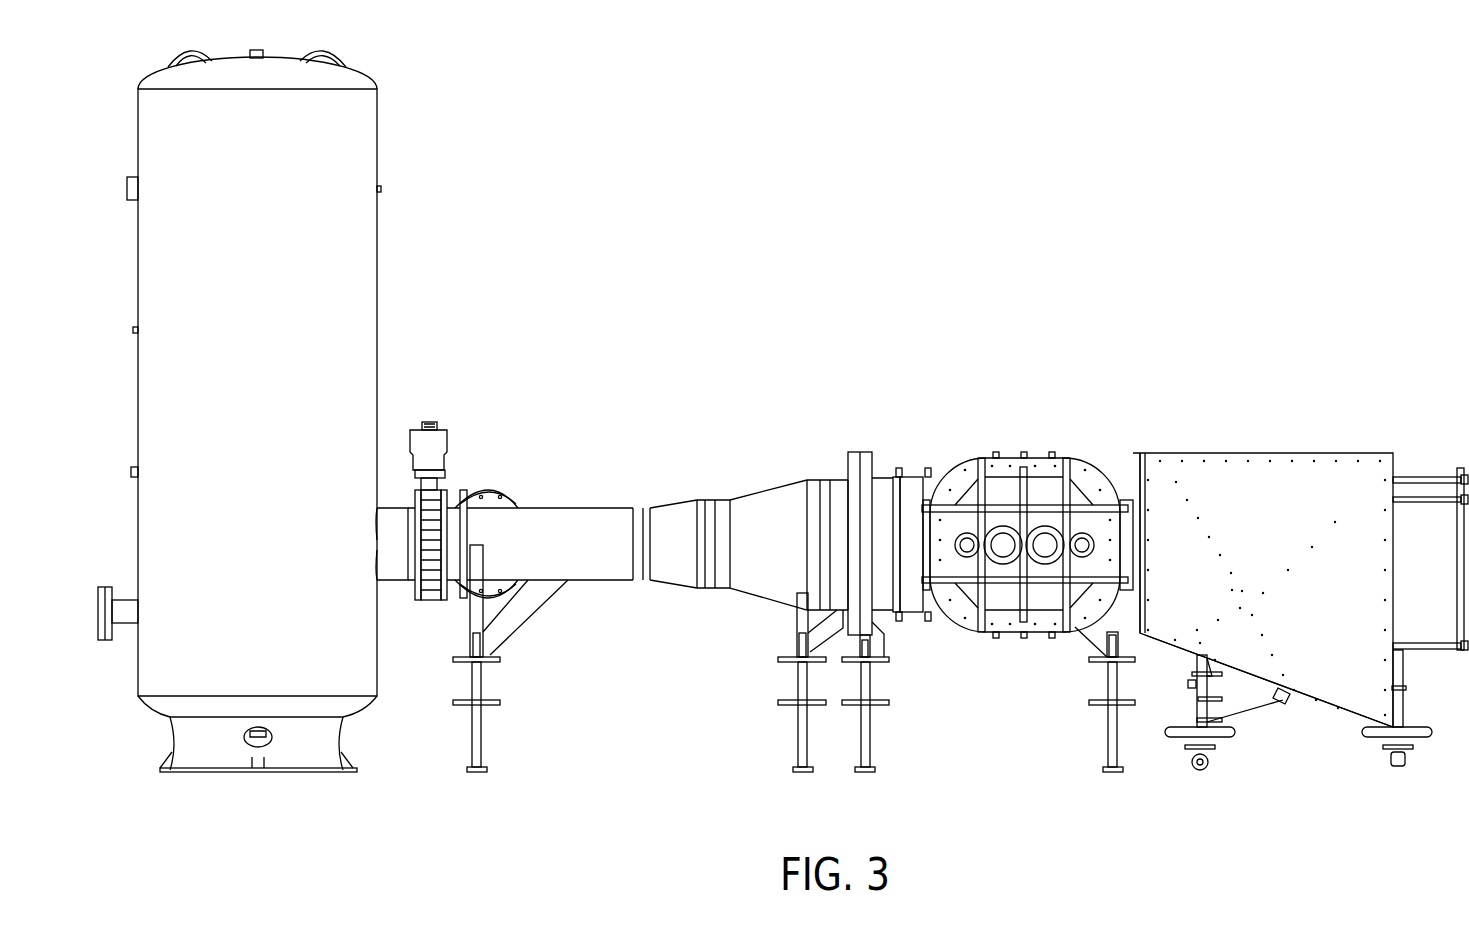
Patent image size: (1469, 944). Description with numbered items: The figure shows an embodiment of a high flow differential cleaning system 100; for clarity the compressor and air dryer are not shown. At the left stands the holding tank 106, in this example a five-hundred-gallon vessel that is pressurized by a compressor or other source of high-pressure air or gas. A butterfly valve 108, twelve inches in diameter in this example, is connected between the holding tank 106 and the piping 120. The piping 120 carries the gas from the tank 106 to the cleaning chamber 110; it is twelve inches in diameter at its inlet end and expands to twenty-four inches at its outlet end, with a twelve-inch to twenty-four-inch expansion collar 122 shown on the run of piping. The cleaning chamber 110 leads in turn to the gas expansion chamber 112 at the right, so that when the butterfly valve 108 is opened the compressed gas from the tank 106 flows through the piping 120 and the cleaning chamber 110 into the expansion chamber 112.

The high flow differential cleaning system 100 is at (1280, 184).
The holding tank 106 is at (362, 72).
The butterfly valve 108 is at (427, 422).
The cleaning chamber 110 is at (972, 457).
The gas expansion chamber 112 is at (1268, 452).
The piping 120 is at (612, 507).
The expansion collar 122 is at (865, 452).